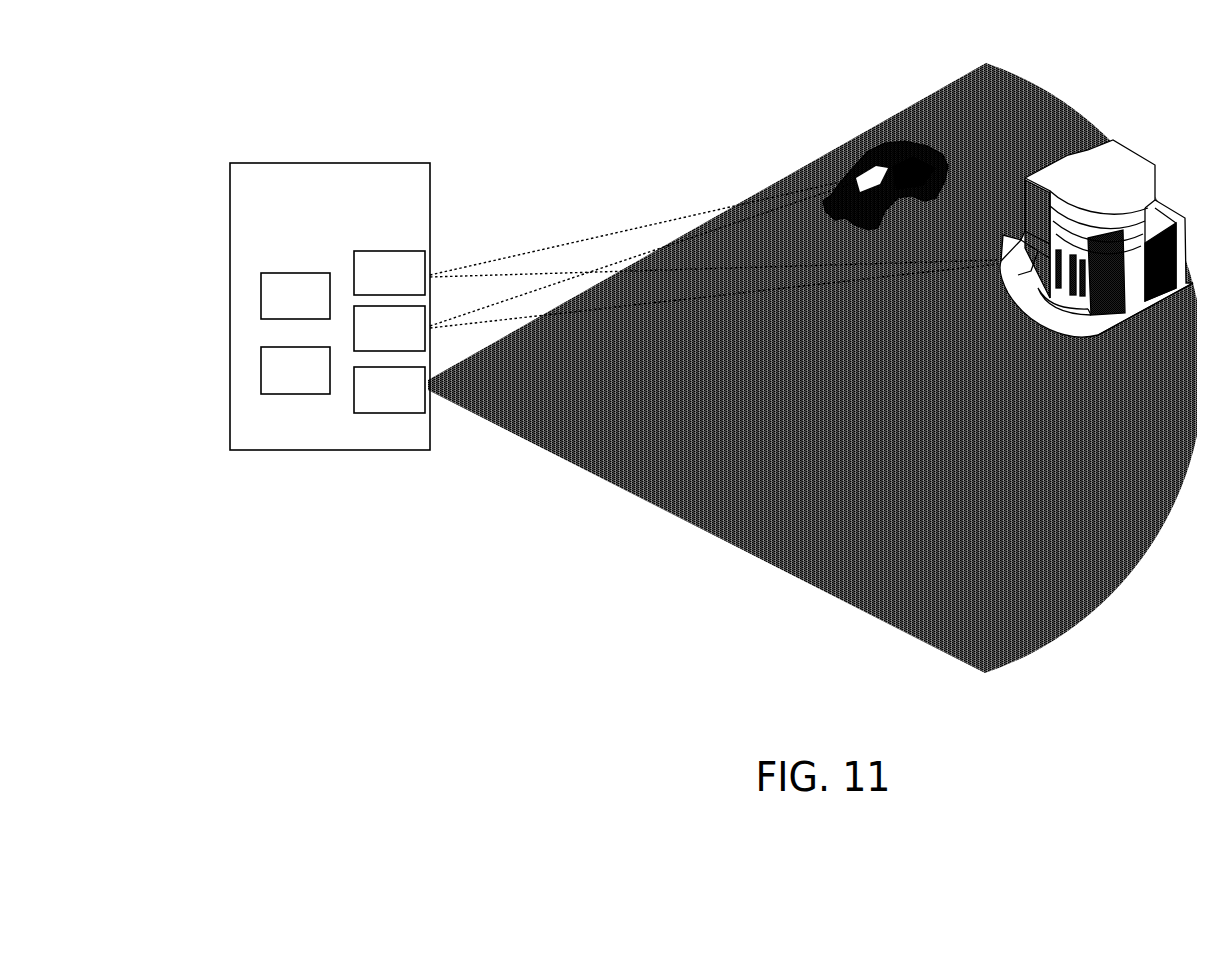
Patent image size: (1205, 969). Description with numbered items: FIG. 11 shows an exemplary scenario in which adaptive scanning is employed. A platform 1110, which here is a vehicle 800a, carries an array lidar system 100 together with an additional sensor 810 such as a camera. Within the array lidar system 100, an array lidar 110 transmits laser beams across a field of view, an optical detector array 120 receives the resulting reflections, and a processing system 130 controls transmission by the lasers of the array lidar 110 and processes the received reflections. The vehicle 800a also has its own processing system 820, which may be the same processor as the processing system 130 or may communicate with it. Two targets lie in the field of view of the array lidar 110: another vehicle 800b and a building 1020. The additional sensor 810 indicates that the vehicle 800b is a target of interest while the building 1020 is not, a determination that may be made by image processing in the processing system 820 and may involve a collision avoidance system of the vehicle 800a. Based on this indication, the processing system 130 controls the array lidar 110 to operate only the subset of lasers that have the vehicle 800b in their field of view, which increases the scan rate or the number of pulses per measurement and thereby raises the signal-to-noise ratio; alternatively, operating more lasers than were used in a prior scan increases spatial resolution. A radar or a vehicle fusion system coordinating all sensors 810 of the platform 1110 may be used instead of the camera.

The platform 1110 is at (366, 306).
The vehicle 800a is at (383, 202).
The array lidar system 100 is at (432, 235).
The array lidar 110 is at (362, 334).
The optical detector array 120 is at (362, 279).
The processing system 130 is at (268, 302).
The sensor 810 is at (362, 396).
The processing system 820 is at (268, 376).
The vehicle 800b is at (860, 130).
The building 1020 is at (1100, 117).